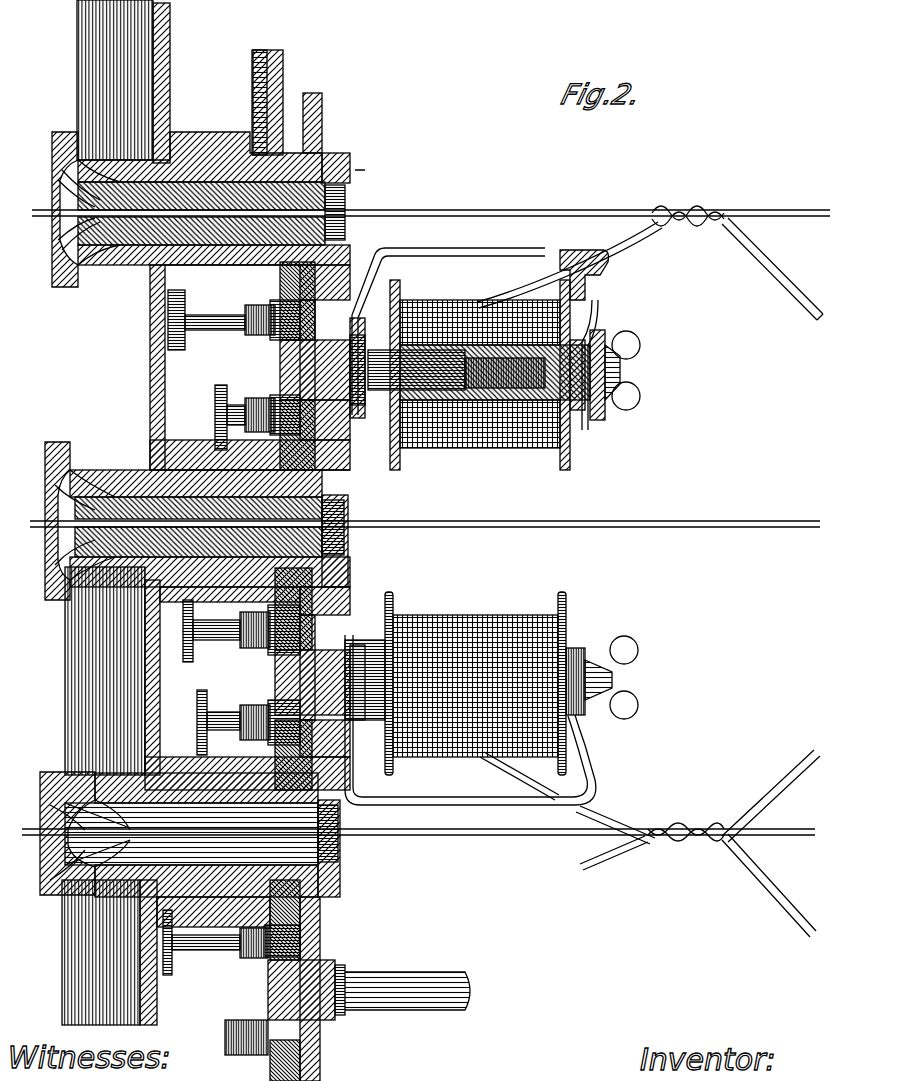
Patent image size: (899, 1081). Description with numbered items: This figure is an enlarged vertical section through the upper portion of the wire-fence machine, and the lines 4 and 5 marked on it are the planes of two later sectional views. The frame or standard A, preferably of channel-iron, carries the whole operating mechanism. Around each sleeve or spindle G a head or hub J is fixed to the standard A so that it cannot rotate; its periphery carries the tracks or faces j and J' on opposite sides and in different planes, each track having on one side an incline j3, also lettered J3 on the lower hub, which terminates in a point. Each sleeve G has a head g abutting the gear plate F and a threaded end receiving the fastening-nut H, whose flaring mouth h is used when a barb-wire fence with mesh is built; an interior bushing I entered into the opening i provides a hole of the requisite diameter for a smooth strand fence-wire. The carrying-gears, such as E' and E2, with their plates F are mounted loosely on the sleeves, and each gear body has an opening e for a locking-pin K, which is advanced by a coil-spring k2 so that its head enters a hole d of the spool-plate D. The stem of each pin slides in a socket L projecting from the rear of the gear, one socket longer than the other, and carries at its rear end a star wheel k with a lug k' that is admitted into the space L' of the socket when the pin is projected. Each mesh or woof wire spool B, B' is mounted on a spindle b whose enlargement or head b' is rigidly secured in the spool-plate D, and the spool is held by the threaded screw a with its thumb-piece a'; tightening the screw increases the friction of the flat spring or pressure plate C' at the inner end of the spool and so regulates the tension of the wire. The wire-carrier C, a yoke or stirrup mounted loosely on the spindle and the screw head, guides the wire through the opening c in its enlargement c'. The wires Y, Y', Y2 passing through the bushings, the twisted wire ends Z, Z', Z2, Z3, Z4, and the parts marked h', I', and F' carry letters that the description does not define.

The frame or standard A is at (116, 512).
The fastening-nut H is at (85, 511).
The flaring mouth h is at (47, 507).
The opening h' is at (183, 403).
The head or hub J is at (210, 593).
The track or face J' is at (175, 266).
The incline J3 is at (203, 881).
The track or face j is at (221, 406).
The incline j3 is at (209, 478).
The gear E' is at (307, 329).
The gear E2 is at (312, 770).
The plate F is at (322, 572).
The plate F' is at (340, 773).
The sleeve or spindle G is at (343, 525).
The interior bushing I is at (195, 523).
The sleeve I' is at (174, 680).
The opening i is at (346, 204).
The line wire Y is at (431, 209).
The second line wire Y' is at (425, 514).
The third line wire Y2 is at (540, 838).
The branch wire Z is at (772, 269).
The branch wire Z' is at (771, 796).
The branch wire Z2 is at (622, 858).
The branch wire Z3 is at (768, 870).
The connecting wire Z4 is at (517, 776).
The head g is at (335, 270).
The spool-plate D is at (300, 924).
The star wheel k is at (204, 653).
The lug, cam or projection k' is at (209, 691).
The coil-spring k2 is at (232, 525).
The locking-pin K is at (211, 680).
The socket L is at (213, 651).
The space L' is at (176, 680).
The opening e is at (250, 669).
The holes d is at (300, 324).
The spindle b is at (407, 680).
The enlargement or head b' is at (326, 675).
The mesh or woof wire spool B is at (490, 375).
The mesh or woof wire spool B' is at (465, 679).
The wire-carrier C is at (470, 533).
The flat spring or pressure plate C' is at (366, 471).
The opening or passage c is at (569, 265).
The enlargement c' is at (597, 528).
The threaded screw a is at (612, 524).
The thumb-piece a' is at (632, 526).
The section line 4 is at (252, 165).
The section line 5 is at (200, 265).